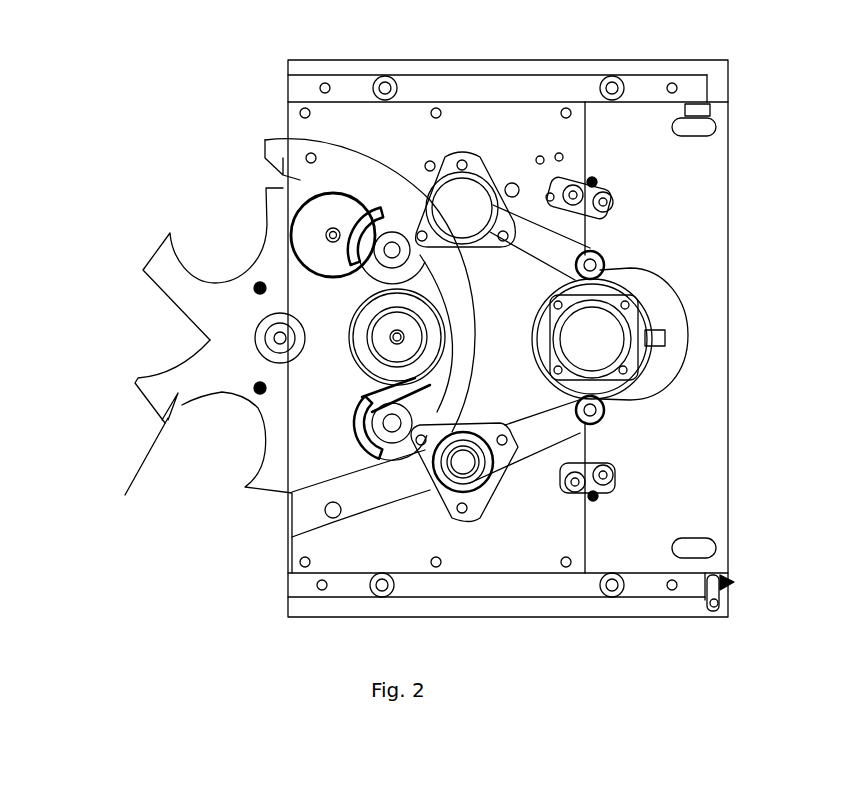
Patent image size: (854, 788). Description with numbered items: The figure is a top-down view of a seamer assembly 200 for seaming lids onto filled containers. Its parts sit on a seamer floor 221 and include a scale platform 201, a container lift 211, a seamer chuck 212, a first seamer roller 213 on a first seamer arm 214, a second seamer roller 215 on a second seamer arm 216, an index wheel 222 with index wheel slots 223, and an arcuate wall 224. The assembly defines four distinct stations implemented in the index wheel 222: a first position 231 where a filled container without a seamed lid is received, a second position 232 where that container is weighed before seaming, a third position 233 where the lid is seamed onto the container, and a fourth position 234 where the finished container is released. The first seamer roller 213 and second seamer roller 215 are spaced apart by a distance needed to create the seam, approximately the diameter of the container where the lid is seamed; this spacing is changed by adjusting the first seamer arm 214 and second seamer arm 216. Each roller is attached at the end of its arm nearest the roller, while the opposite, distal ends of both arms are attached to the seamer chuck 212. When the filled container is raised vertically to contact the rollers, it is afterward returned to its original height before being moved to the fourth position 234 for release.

The seamer assembly 200 is at (511, 313).
The scale platform 201 is at (318, 227).
The container lift 211 is at (362, 325).
The seamer chuck 212 is at (593, 339).
The first seamer roller 213 is at (333, 190).
The first seamer arm 214 is at (587, 220).
The second seamer roller 215 is at (379, 448).
The second seamer arm 216 is at (538, 435).
The seamer floor 221 is at (302, 488).
The index wheel 222 is at (116, 463).
The index wheel slots 223 is at (202, 340).
The arcuate wall 224 is at (462, 300).
The first position 231 is at (173, 341).
The second position 232 is at (340, 215).
The third position 233 is at (412, 340).
The fourth position 234 is at (222, 428).